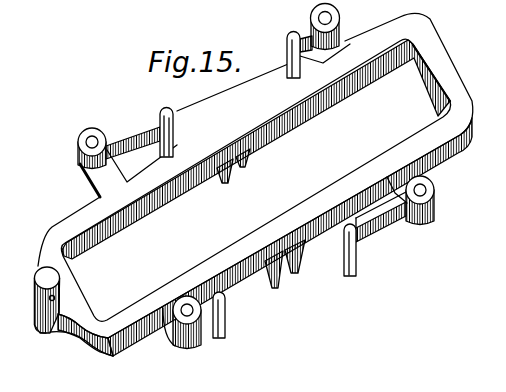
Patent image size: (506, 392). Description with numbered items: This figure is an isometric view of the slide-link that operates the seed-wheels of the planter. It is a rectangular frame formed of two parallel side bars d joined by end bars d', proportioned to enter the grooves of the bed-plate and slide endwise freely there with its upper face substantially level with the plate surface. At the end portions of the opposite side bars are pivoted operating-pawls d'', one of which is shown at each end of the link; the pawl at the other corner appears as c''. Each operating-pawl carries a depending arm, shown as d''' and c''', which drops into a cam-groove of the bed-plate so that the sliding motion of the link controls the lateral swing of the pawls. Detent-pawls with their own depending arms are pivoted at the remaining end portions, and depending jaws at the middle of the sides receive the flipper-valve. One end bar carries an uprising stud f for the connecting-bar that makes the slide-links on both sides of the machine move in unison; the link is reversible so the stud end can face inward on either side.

The side bars d is at (255, 184).
The end bars d' is at (251, 209).
The operating-pawls d'' is at (395, 209).
The depending arm d''' is at (359, 250).
The guide roller c'' is at (127, 153).
The guide post c''' is at (173, 133).
The uprising stud f is at (47, 300).